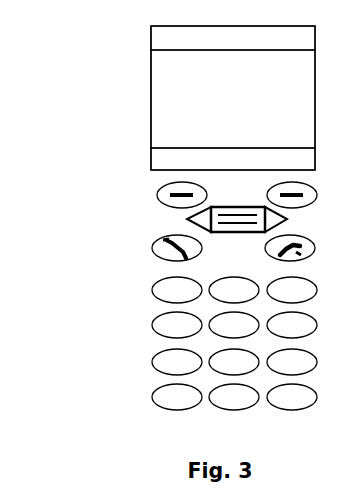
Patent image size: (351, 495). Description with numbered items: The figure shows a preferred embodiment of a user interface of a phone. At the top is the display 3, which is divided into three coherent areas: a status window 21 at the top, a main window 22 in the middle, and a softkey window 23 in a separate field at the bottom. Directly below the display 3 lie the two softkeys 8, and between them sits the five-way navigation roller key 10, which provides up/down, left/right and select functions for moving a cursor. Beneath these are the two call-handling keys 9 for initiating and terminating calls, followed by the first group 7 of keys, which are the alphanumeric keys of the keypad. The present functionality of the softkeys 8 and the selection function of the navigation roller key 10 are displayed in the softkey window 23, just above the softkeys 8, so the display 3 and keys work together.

The display 3 is at (92, 168).
The status window 21 is at (151, 29).
The main window 22 is at (151, 90).
The softkey window 23 is at (151, 152).
The softkeys 8 is at (161, 202).
The five-way navigation roller key 10 is at (207, 225).
The call-handling keys 9 is at (152, 260).
The first group of keys 7 is at (150, 358).